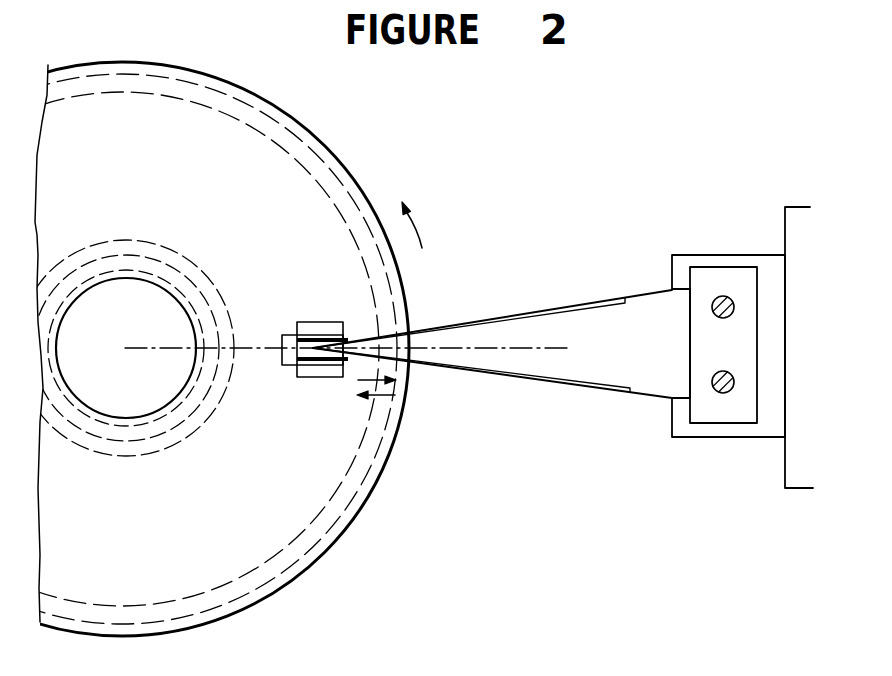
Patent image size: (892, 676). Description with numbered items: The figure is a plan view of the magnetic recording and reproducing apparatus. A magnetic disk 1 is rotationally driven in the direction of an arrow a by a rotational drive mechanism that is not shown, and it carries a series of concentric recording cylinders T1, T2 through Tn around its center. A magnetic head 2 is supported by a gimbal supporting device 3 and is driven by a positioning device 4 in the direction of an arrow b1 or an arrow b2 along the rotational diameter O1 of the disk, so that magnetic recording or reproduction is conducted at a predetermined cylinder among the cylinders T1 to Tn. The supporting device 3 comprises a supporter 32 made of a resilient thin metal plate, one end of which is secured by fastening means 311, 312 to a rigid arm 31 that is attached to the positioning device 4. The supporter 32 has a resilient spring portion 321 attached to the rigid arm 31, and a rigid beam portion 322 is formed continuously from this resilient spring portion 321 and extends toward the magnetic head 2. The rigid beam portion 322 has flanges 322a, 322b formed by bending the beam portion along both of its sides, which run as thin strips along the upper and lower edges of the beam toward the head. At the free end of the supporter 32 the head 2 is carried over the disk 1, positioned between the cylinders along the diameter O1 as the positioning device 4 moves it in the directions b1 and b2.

The magnetic disk 1 is at (285, 349).
The magnetic head 2 is at (310, 328).
The gimbal supporting device 3 is at (515, 290).
The positioning device 4 is at (800, 222).
The rigid arm 31 is at (711, 346).
The supporter 32 is at (553, 309).
The fastening means 311 is at (725, 393).
The fastening means 312 is at (720, 297).
The resilient spring portion 321 is at (648, 372).
The rigid beam portion 322 is at (471, 377).
The flange 322a is at (550, 385).
The flange 322b is at (445, 327).
The rotational diameter O1 is at (160, 348).
The cylinder T1 is at (130, 435).
The cylinder T2 is at (178, 440).
The cylinder Tn is at (327, 517).
The arrow a is at (420, 241).
The arrow b1 is at (375, 372).
The arrow b2 is at (382, 398).